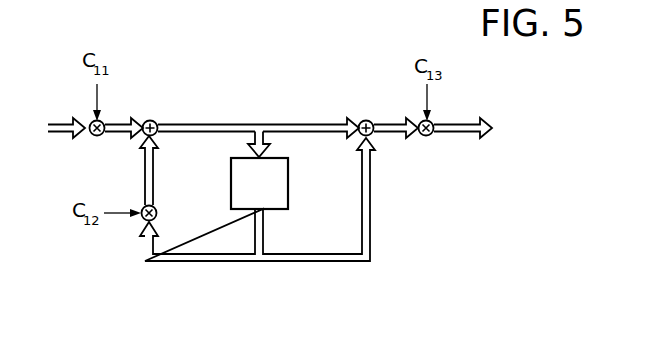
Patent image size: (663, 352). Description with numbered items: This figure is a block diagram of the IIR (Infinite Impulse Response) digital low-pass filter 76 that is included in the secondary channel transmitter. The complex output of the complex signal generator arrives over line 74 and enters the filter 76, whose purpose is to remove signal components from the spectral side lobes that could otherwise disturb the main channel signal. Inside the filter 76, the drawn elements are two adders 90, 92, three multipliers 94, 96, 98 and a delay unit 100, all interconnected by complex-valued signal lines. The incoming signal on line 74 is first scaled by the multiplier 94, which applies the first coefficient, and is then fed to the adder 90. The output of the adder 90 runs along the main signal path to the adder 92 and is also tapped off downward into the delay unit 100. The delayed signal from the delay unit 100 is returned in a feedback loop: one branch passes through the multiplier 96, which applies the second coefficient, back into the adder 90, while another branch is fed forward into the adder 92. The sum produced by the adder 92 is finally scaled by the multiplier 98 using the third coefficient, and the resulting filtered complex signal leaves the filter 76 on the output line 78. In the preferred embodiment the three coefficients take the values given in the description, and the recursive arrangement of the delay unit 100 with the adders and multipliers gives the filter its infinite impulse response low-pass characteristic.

The line 74 is at (60, 120).
The IIR digital low-pass filter 76 is at (413, 227).
The output line 78 is at (462, 125).
The adder 90 is at (155, 122).
The adder 92 is at (371, 120).
The multiplier 94 is at (93, 136).
The multiplier 96 is at (157, 209).
The multiplier 98 is at (430, 139).
The delay unit 100 is at (288, 186).